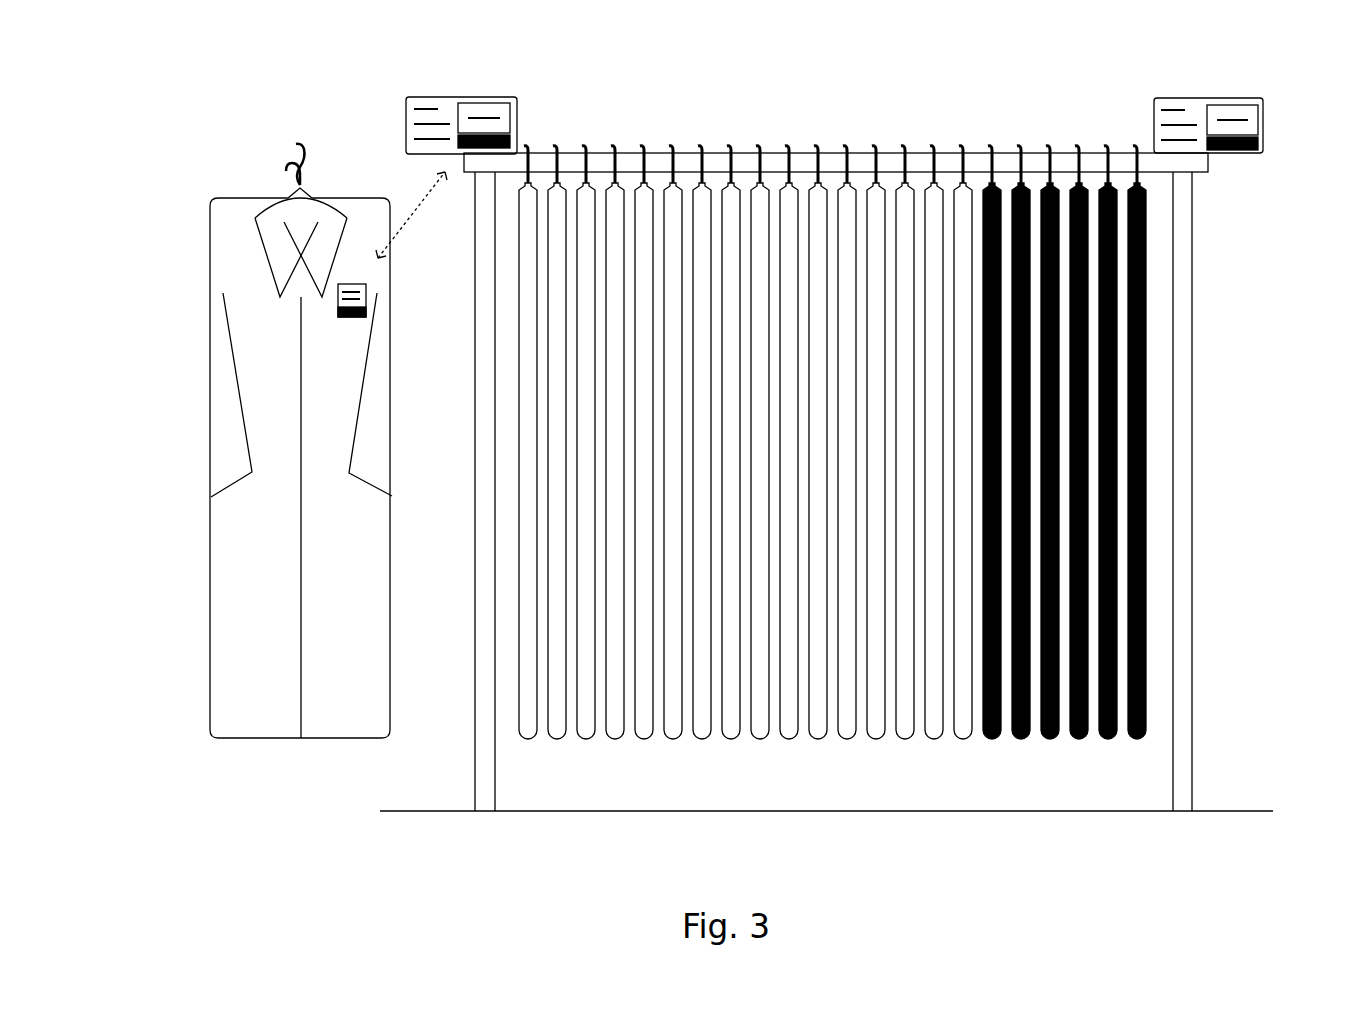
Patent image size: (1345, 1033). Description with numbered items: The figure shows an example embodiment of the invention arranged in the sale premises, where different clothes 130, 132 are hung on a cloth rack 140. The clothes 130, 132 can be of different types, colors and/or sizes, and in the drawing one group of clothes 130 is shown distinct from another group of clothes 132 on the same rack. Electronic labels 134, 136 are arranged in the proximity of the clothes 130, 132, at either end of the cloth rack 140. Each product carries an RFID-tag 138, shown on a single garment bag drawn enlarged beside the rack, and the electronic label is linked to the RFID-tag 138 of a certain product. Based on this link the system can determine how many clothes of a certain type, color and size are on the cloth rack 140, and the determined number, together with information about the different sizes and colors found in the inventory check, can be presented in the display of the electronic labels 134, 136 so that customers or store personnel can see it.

The clothes 130 is at (238, 212).
The clothes 132 is at (1083, 210).
The electronic label 134 is at (450, 108).
The electronic label 136 is at (1247, 118).
The RFID-tag 138 is at (353, 296).
The cloth rack 140 is at (833, 163).